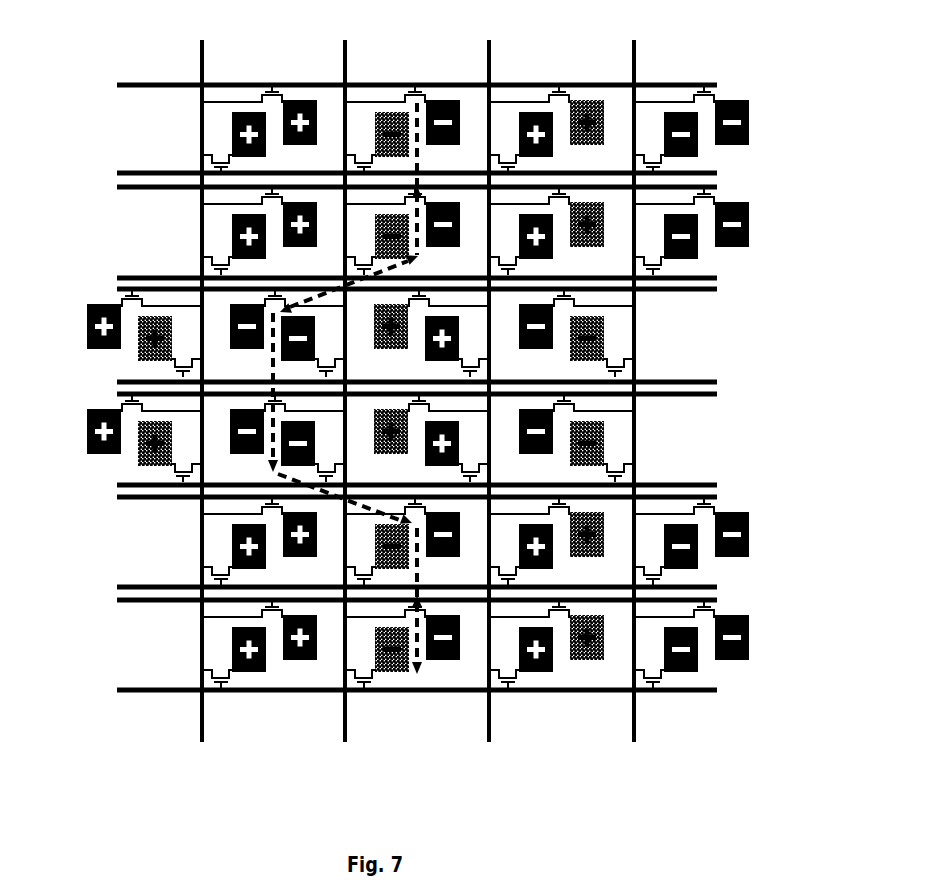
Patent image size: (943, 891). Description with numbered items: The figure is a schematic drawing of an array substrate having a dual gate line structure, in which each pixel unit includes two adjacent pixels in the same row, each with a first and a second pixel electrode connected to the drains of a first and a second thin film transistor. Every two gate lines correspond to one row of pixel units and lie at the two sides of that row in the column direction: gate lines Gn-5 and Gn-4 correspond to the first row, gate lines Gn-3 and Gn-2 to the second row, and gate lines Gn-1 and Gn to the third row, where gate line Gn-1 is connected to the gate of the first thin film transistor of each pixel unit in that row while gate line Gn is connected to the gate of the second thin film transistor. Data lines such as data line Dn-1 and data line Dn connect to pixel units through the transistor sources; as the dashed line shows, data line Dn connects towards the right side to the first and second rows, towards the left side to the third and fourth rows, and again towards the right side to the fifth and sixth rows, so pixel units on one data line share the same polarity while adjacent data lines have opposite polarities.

The gate line Gn-5 is at (373, 84).
The gate line Gn-4 is at (373, 157).
The gate line Gn-3 is at (373, 196).
The gate line Gn-2 is at (373, 262).
The gate line Gn-1 is at (373, 302).
The gate line Gn is at (373, 369).
The data line Dn-1 is at (207, 371).
The data line Dn is at (338, 371).